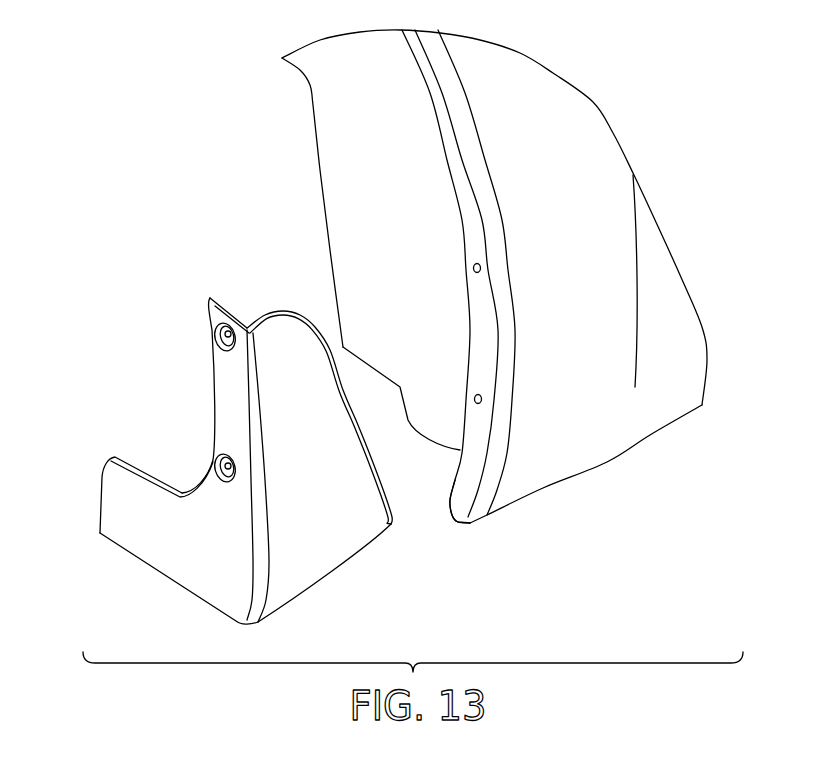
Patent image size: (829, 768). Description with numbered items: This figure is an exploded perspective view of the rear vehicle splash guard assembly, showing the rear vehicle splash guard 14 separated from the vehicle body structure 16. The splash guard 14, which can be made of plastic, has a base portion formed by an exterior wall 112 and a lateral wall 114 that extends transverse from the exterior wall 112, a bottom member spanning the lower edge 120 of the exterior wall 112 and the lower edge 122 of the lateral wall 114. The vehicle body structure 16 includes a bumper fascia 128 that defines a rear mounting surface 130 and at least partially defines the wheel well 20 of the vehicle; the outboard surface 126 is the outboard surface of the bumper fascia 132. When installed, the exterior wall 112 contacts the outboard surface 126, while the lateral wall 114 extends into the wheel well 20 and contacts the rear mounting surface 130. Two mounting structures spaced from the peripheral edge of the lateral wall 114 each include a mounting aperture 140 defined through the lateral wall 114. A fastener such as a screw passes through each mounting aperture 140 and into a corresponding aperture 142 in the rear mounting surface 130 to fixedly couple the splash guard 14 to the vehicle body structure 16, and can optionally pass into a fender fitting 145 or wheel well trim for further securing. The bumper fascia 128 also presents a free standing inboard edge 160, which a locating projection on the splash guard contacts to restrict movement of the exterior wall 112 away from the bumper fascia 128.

The rear vehicle splash guard 14 is at (221, 472).
The vehicle body structure 16 is at (563, 113).
The wheel well 20 is at (352, 136).
The exterior wall 112 is at (348, 502).
The lateral wall 114 is at (132, 520).
The lower edge of the exterior wall 120 is at (317, 572).
The lower edge of the lateral wall 122 is at (177, 587).
The outboard surface 126 is at (597, 442).
The bumper fascia 128 is at (672, 330).
The rear mounting surface 130 is at (483, 333).
The bumper fascia 132 is at (528, 477).
The mounting aperture 140 is at (217, 338).
The aperture 142 is at (475, 264).
The fender fitting 145 is at (371, 191).
The inboard edge 160 is at (469, 304).